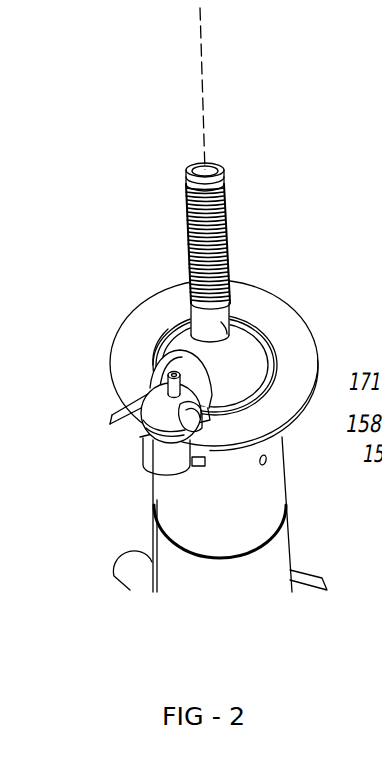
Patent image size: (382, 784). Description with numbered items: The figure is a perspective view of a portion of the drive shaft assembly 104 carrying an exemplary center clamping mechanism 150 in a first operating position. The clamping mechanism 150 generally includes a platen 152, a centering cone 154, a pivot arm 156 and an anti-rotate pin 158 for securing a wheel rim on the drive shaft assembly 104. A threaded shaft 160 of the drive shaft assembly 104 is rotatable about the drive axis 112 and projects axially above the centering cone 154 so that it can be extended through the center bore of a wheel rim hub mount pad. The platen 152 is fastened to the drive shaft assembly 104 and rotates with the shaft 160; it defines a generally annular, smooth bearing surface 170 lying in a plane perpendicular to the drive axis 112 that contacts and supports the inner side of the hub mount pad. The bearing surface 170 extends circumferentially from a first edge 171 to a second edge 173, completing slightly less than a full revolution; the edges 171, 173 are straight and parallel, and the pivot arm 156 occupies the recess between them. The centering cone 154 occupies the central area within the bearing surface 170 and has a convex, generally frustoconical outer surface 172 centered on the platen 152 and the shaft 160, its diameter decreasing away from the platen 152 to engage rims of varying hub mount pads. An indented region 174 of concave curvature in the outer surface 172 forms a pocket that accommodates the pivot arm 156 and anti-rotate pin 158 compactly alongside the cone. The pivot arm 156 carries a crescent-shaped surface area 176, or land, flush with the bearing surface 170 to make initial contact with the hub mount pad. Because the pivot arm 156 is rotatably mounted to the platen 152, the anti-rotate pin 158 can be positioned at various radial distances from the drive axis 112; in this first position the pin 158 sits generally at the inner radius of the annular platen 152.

The drive shaft assembly 104 is at (303, 530).
The drive axis 112 is at (206, 42).
The center clamping mechanism 150 is at (133, 273).
The platen 152 is at (284, 299).
The centering cone 154 is at (244, 349).
The pivot arm 156 is at (100, 441).
The anti-rotate pin 158 is at (153, 385).
The threaded shaft 160 is at (229, 205).
The bearing surface 170 is at (258, 292).
The first edge 171 is at (82, 414).
The outer surface 172 is at (160, 344).
The second edge 173 is at (205, 426).
The indented region 174 is at (194, 365).
The surface area 176 is at (138, 441).